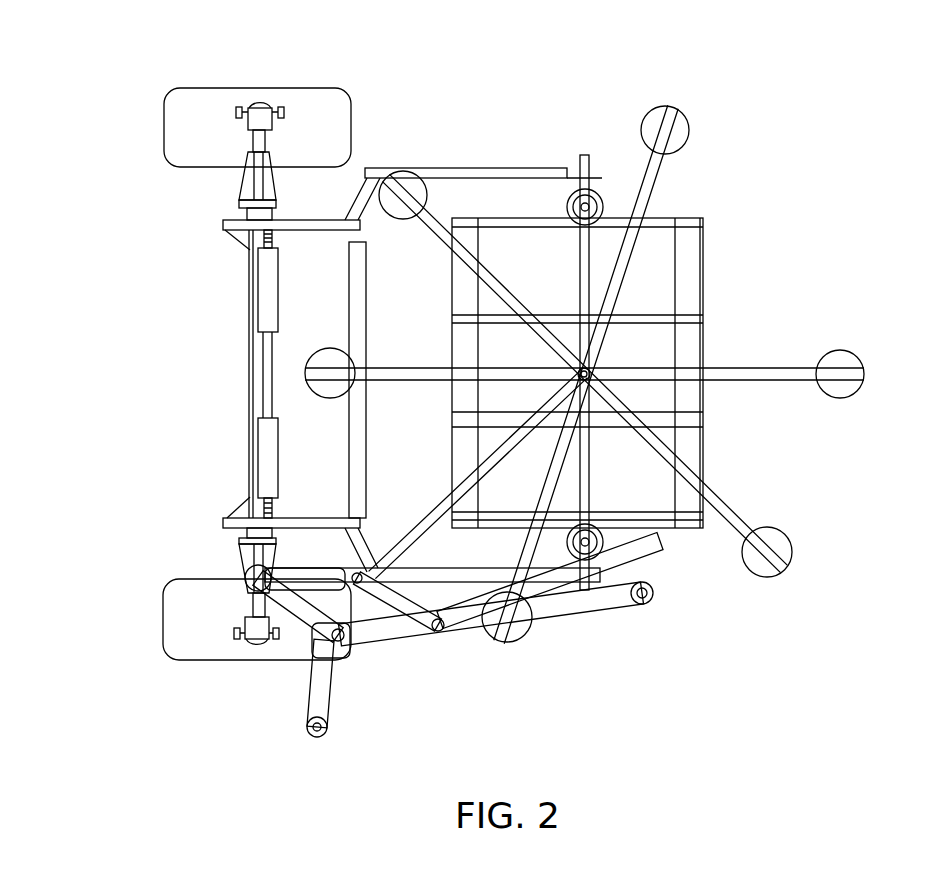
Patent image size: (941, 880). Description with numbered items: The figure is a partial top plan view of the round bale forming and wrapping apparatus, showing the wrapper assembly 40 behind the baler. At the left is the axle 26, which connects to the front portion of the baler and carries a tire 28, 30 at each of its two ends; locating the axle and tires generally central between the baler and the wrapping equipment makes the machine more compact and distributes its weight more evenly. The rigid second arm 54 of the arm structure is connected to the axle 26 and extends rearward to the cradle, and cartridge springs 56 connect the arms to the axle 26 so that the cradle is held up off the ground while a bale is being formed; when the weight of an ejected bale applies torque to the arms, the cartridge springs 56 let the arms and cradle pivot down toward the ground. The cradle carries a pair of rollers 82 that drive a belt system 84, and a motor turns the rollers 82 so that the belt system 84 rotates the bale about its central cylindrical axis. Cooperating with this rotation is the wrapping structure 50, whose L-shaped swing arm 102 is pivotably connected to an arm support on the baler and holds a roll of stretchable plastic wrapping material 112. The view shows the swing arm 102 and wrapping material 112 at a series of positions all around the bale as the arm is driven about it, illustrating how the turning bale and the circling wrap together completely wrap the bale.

The axle 26 is at (250, 375).
The tire 28 is at (205, 664).
The tire 30 is at (218, 88).
The wrapper assembly 40 is at (618, 369).
The wrapping structure 50 is at (595, 636).
The second arm 54 is at (438, 570).
The cartridge springs 56 is at (268, 298).
The rollers 82 is at (572, 373).
The belt system 84 is at (635, 296).
The swing arm 102 is at (655, 178).
The wrapping material 112 is at (689, 128).